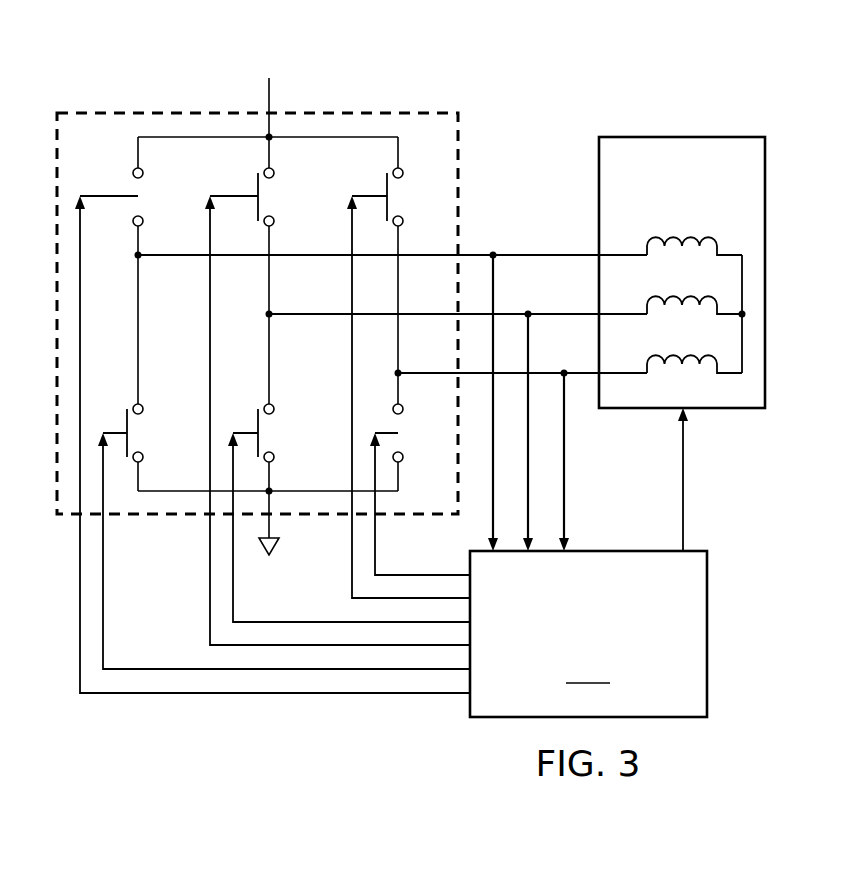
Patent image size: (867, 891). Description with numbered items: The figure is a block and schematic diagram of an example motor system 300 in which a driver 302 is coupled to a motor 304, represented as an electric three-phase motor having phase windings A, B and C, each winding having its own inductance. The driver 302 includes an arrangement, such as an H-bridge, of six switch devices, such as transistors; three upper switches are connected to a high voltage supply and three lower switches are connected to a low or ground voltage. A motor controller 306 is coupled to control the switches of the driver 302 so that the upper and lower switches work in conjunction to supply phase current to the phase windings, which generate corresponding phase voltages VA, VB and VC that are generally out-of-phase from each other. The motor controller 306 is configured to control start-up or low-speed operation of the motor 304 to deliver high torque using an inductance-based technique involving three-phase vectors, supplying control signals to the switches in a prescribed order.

The motor system 300 is at (534, 70).
The driver 302 is at (174, 113).
The motor 304 is at (694, 137).
The motor controller 306 is at (588, 562).